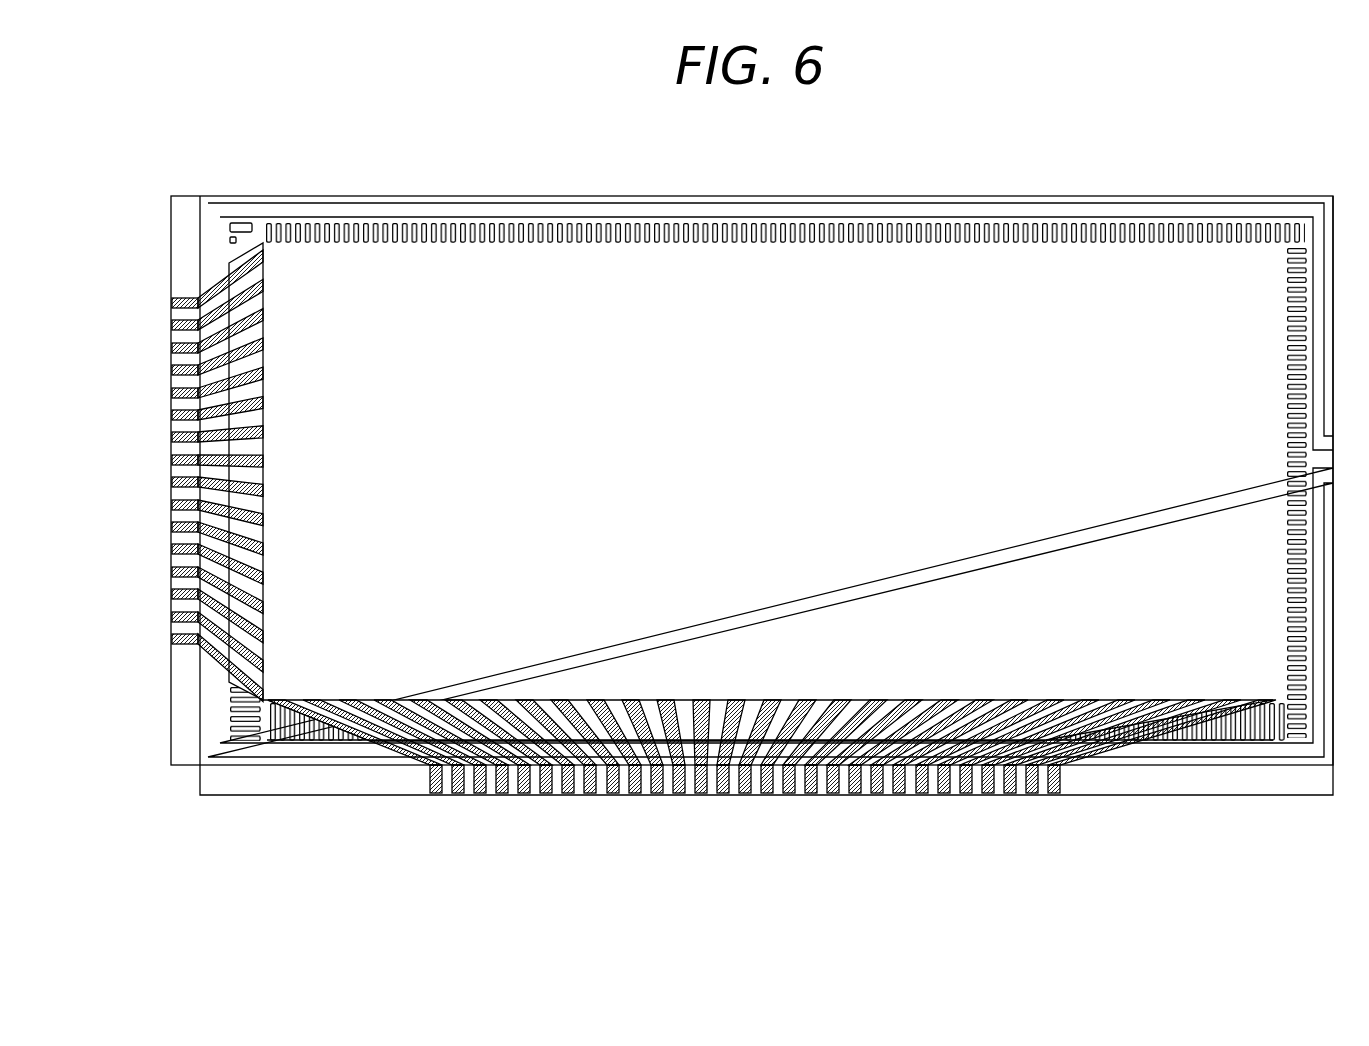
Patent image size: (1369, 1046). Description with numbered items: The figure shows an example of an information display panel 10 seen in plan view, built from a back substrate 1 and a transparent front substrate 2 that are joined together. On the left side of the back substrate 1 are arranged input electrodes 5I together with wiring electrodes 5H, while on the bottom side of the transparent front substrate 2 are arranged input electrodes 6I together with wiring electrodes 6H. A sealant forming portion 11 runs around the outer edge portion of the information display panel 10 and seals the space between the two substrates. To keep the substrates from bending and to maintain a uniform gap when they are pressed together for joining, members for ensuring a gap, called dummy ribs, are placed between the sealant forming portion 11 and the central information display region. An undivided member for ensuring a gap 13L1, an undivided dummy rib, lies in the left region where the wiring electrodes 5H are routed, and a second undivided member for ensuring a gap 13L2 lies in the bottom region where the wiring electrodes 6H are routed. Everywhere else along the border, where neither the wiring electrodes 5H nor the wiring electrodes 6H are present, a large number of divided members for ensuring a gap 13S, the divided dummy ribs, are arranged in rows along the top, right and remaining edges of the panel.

The back substrate 1 is at (186, 197).
The transparent front substrate 2 is at (1260, 782).
The information display panel 10 is at (1145, 190).
The sealant forming portion 11 is at (752, 204).
The divided members for ensuring a gap (divided dummy ribs) 13S is at (440, 244).
The undivided member for ensuring a gap (undivided dummy rib) 13L1 is at (266, 465).
The undivided member for ensuring a gap (undivided dummy rib) 13L2 is at (716, 701).
The wiring electrodes 5H is at (264, 290).
The input electrodes 5I is at (172, 630).
The wiring electrodes 6H is at (1196, 715).
The input electrodes 6I is at (470, 795).